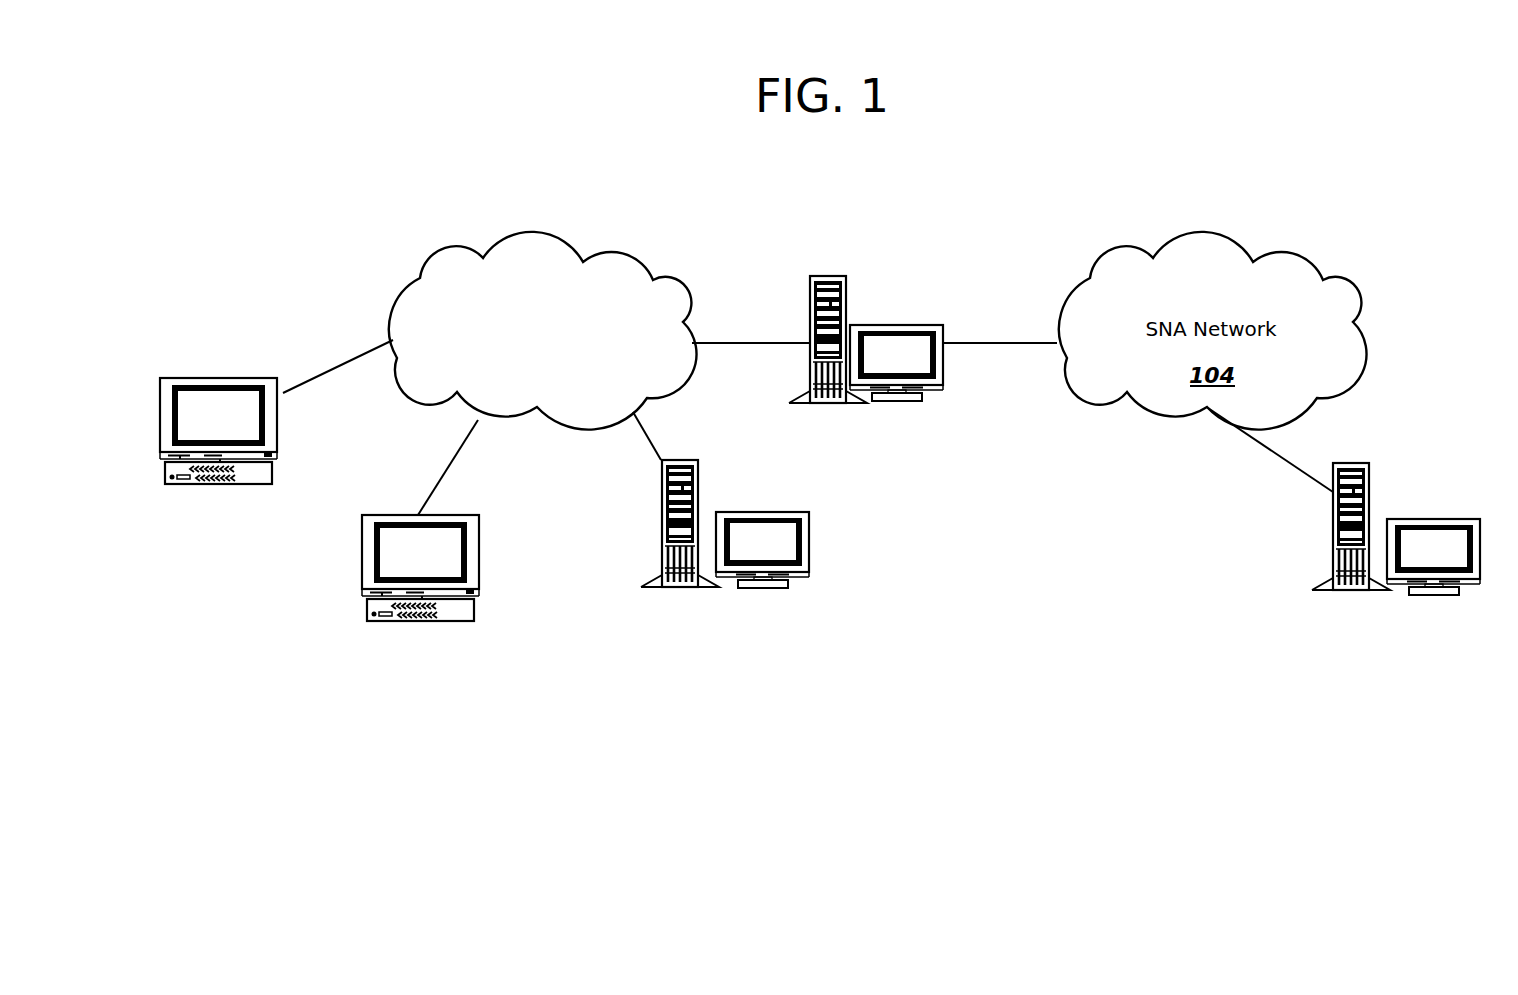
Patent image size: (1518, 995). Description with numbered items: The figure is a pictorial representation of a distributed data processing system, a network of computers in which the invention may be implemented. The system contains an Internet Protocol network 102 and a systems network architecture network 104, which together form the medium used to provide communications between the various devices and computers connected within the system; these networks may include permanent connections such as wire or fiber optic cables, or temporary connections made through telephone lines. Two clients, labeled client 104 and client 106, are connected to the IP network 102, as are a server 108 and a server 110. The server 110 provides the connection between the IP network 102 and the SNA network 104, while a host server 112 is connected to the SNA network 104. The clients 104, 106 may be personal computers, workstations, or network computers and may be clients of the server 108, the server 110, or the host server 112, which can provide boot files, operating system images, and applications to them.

The Internet Protocol (IP) network 102 is at (566, 386).
The systems network architecture (SNA) network 104 is at (215, 378).
The client 106 is at (395, 620).
The server 108 is at (790, 583).
The server 110 is at (906, 323).
The host server 112 is at (1425, 518).